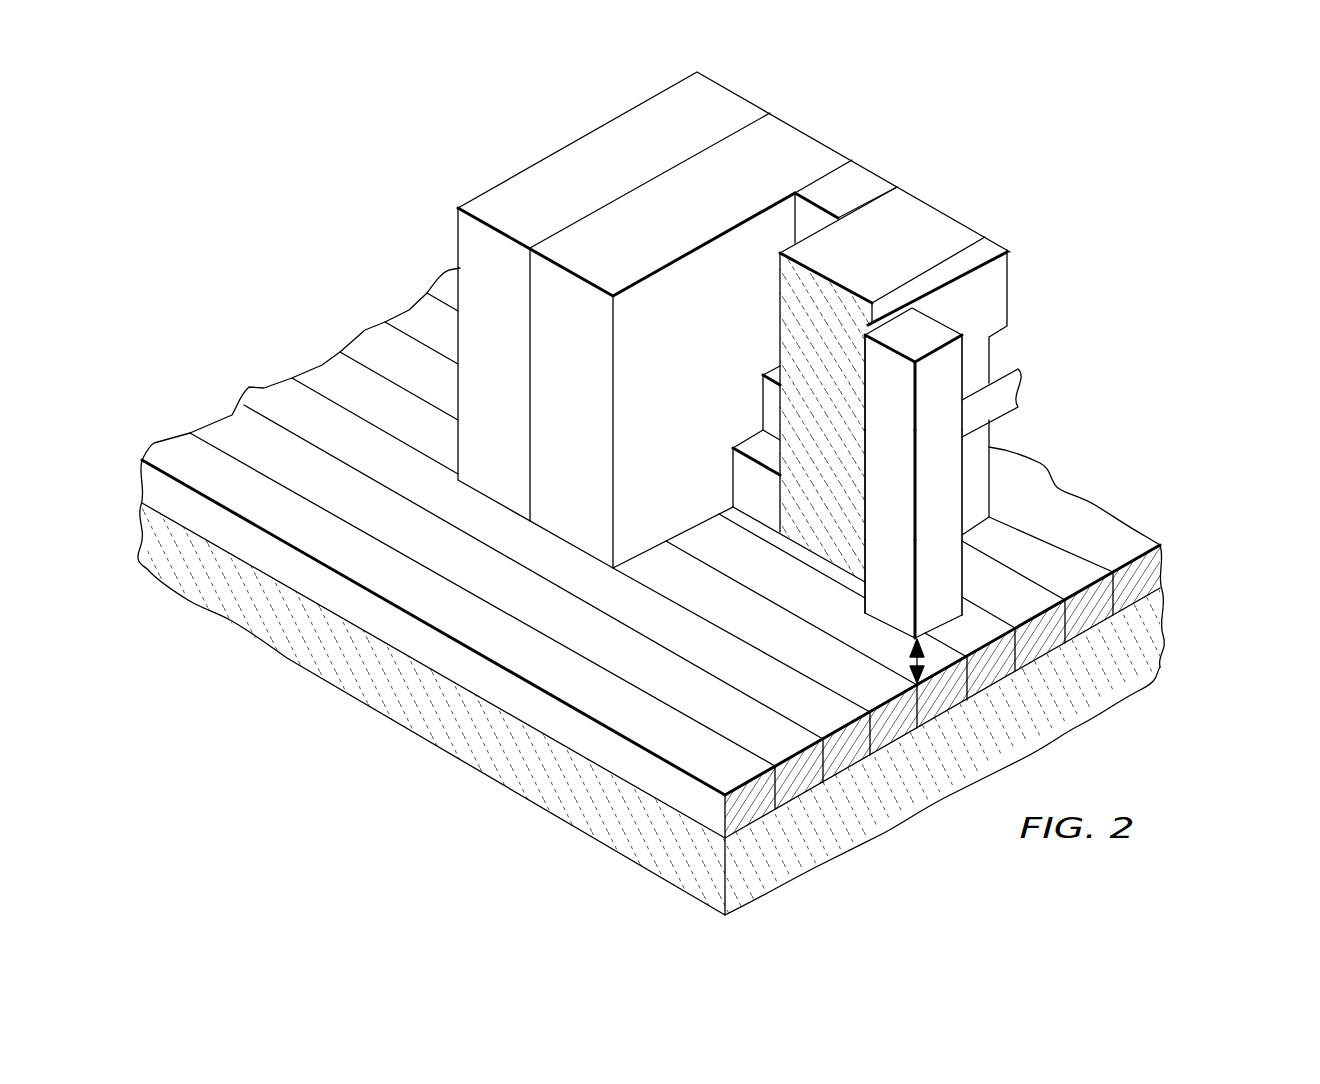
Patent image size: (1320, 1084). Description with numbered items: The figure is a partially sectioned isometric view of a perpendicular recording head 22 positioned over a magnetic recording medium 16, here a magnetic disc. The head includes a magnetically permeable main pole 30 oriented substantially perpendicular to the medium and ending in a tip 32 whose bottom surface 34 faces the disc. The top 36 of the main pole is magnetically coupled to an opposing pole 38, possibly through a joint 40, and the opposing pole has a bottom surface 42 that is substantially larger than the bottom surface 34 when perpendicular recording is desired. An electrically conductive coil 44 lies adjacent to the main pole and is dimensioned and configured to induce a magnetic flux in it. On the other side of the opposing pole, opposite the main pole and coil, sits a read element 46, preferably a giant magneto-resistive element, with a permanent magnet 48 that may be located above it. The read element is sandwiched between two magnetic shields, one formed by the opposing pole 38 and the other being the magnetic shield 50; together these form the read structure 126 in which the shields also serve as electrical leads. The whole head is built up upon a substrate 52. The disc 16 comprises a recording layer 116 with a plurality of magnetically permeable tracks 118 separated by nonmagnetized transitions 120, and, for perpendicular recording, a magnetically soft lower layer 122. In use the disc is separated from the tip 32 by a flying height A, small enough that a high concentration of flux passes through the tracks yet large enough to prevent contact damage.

The magnetic recording medium 16 is at (1137, 432).
The recording head 22 is at (1012, 132).
The main pole 30 is at (925, 502).
The tip 32 is at (925, 608).
The bottom surface 34 is at (891, 630).
The top 36 is at (925, 405).
The opposing pole 38 is at (865, 268).
The joint 40 is at (965, 315).
The bottom surface 42 is at (843, 567).
The electrically conductive coil 44 is at (1022, 385).
The read element 46 is at (742, 478).
The permanent magnet 48 is at (772, 405).
The magnetic shield 50 is at (558, 403).
The substrate 52 is at (480, 367).
The recording layer 116 is at (1190, 568).
The magnetically permeable tracks 118 is at (1115, 527).
The nonmagnetized transitions 120 is at (1036, 502).
The magnetically permeable lower layer 122 is at (1187, 632).
The read structure 126 is at (882, 152).
The flying height A is at (913, 667).